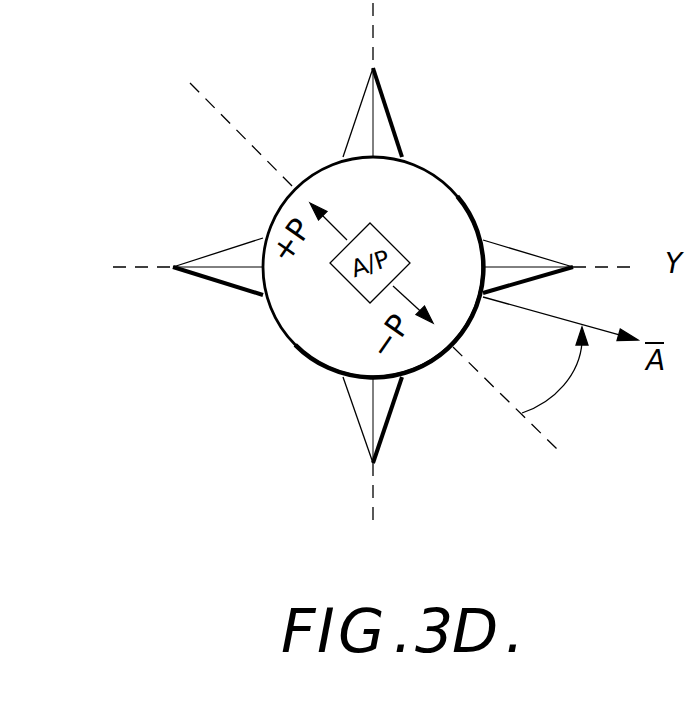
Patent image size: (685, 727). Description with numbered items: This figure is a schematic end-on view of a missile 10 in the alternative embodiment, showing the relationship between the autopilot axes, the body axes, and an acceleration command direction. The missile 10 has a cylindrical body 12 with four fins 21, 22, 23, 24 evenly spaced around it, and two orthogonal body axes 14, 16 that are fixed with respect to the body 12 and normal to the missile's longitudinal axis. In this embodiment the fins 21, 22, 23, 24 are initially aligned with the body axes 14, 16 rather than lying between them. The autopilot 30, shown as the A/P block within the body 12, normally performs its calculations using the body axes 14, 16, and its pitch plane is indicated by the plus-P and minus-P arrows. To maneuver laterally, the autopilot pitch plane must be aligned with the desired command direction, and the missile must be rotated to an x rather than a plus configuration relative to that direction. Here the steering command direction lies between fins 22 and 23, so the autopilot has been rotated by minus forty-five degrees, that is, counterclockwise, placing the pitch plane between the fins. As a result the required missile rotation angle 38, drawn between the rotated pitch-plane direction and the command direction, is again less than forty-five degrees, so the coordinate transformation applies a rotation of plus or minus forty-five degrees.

The missile 10 is at (163, 321).
The cylindrical body 12 is at (277, 332).
The body axis 14 is at (373, 45).
The body axis 16 is at (587, 267).
The fin 21 is at (357, 117).
The fin 22 is at (410, 263).
The fin 23 is at (355, 415).
The fin 24 is at (228, 248).
The autopilot 30 is at (494, 402).
The missile rotation angle 38 is at (573, 375).